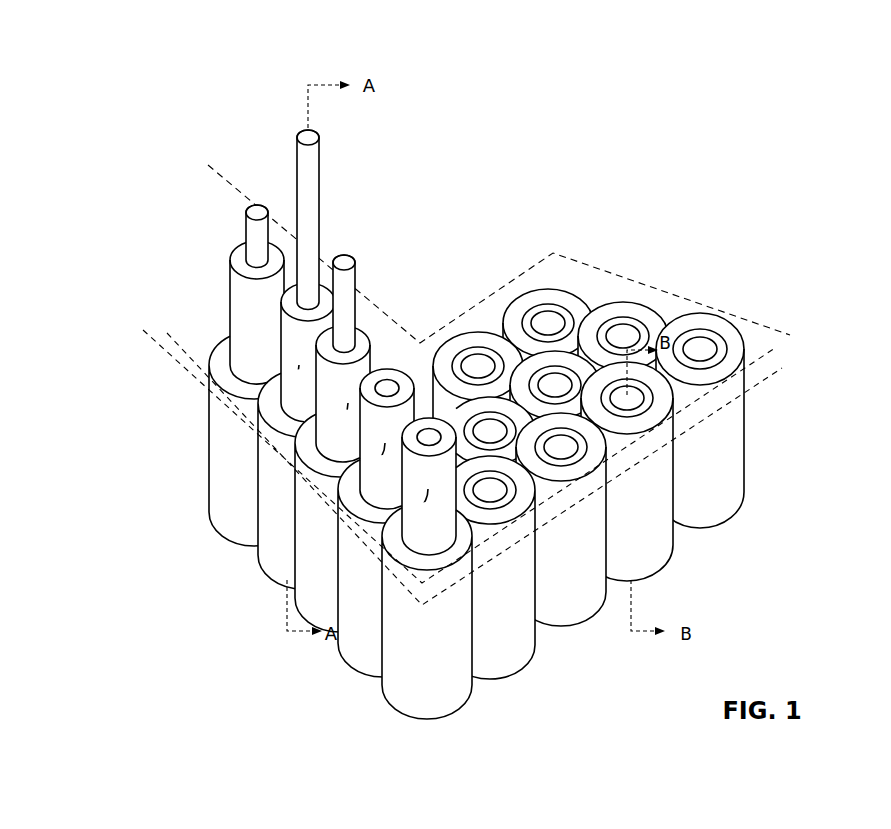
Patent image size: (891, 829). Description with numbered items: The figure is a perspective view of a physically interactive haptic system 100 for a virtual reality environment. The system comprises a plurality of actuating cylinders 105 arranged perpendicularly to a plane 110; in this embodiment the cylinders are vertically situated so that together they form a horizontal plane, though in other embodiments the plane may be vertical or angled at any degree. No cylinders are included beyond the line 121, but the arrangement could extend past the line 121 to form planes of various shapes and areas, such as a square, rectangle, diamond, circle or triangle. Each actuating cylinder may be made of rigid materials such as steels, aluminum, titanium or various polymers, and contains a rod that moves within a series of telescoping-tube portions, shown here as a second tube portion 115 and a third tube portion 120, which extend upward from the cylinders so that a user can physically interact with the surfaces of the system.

The physically interactive haptic system 100 is at (451, 407).
The actuating cylinders 105 is at (745, 443).
The plane 110 is at (213, 405).
The second tube portion 115 is at (230, 297).
The third tube portion 120 is at (246, 228).
The line 121 is at (668, 293).